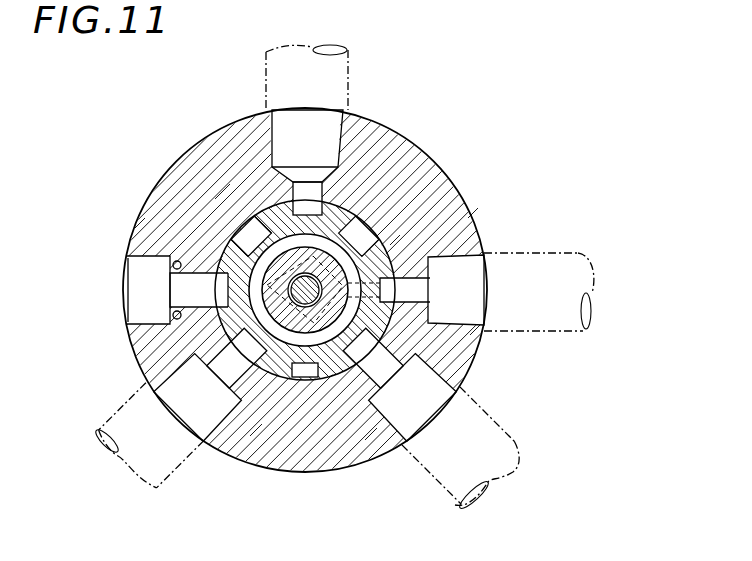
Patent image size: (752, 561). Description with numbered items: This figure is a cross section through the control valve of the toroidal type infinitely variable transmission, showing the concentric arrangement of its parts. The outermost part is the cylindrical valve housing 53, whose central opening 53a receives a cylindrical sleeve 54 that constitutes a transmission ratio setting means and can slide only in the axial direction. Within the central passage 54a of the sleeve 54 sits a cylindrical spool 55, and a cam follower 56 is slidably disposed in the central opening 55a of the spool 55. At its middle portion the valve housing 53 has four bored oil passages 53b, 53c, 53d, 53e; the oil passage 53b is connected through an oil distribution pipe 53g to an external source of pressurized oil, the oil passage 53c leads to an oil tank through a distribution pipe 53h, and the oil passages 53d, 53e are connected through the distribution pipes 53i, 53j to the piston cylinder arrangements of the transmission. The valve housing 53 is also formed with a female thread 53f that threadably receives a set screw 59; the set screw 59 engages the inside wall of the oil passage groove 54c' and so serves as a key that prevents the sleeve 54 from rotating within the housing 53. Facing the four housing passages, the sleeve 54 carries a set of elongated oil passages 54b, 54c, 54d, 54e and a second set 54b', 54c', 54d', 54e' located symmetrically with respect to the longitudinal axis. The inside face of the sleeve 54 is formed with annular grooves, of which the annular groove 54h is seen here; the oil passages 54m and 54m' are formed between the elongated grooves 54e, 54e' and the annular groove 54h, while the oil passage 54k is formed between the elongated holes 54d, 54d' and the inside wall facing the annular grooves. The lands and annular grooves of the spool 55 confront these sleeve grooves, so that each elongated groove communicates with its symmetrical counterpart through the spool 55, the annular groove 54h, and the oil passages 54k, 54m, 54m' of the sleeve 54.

The valve housing 53 is at (440, 230).
The central opening 53a is at (245, 243).
The oil passage 53b is at (282, 133).
The oil passage 53c is at (470, 270).
The oil passage 53d is at (440, 383).
The oil passage 53e is at (210, 420).
The female thread 53f is at (126, 317).
The oil distribution pipe 53g is at (338, 66).
The distribution pipe 53h is at (580, 246).
The distribution pipe 53i is at (516, 447).
The distribution pipe 53j is at (145, 485).
The sleeve 54 is at (300, 392).
The central passage 54a is at (395, 238).
The elongated oil passage 54b is at (216, 171).
The elongated oil passage 54b' is at (320, 440).
The elongated oil passage 54c is at (507, 348).
The oil passage groove 54c' is at (103, 233).
The elongated oil passage 54d is at (385, 468).
The elongated oil passage 54d' is at (179, 157).
The elongated oil passage 54e is at (259, 470).
The elongated oil passage 54e' is at (420, 175).
The annular groove 54h is at (228, 243).
The oil passage 54k is at (476, 215).
The oil passage 54m is at (166, 358).
The oil passage 54m' is at (390, 166).
The spool 55 is at (130, 337).
The central opening 55a is at (408, 360).
The cam follower 56 is at (287, 372).
The set screw 59 is at (132, 279).